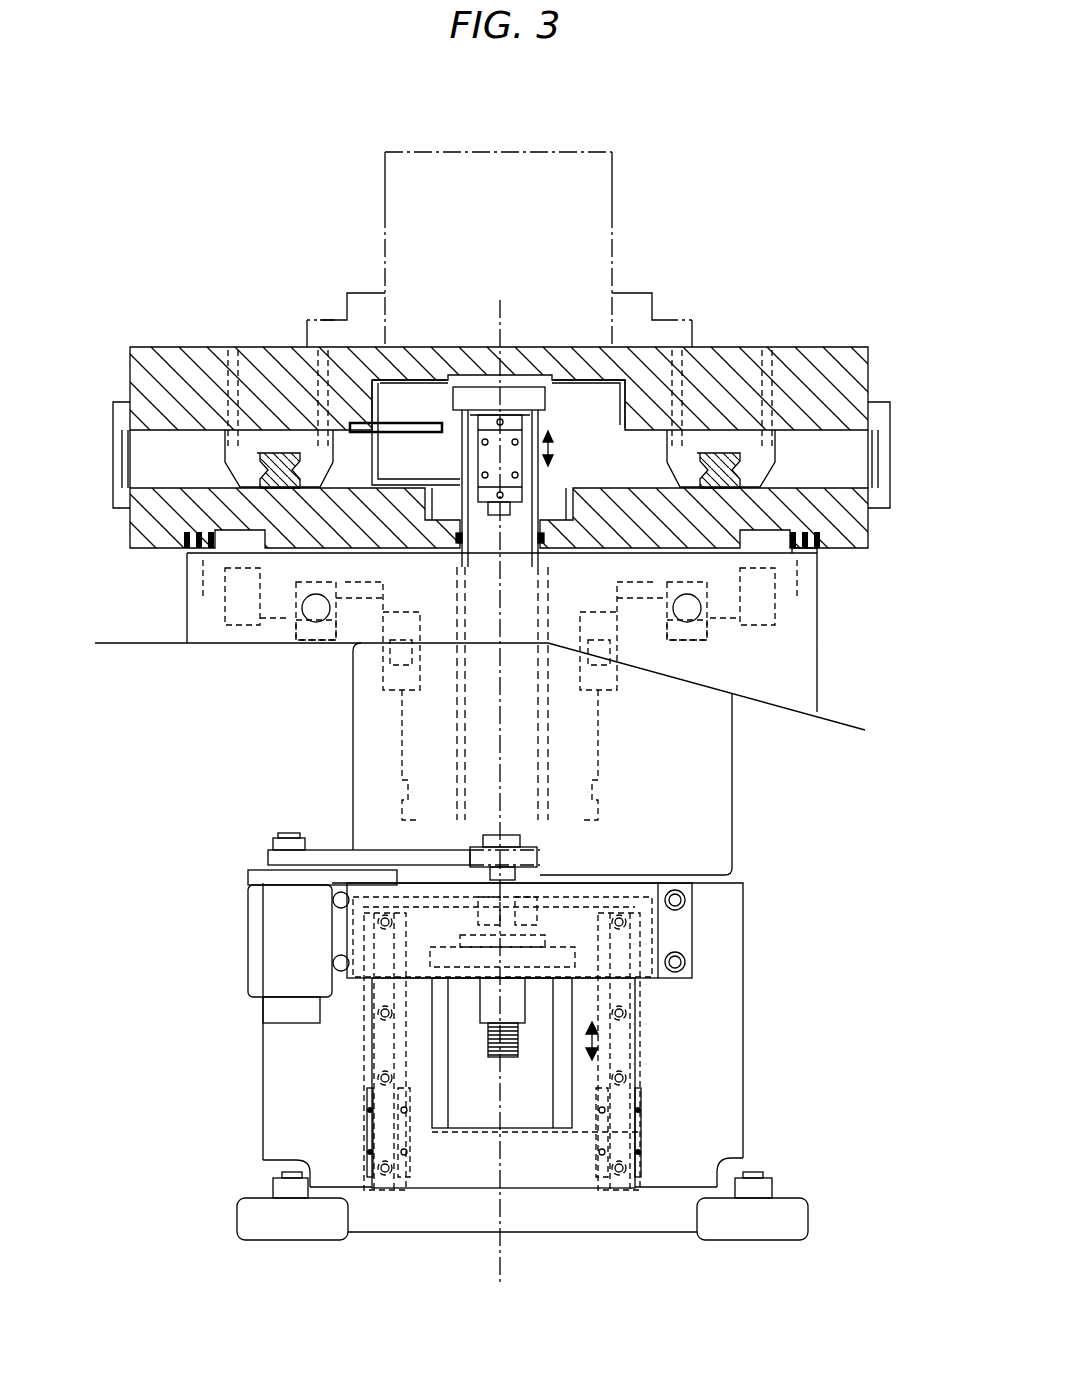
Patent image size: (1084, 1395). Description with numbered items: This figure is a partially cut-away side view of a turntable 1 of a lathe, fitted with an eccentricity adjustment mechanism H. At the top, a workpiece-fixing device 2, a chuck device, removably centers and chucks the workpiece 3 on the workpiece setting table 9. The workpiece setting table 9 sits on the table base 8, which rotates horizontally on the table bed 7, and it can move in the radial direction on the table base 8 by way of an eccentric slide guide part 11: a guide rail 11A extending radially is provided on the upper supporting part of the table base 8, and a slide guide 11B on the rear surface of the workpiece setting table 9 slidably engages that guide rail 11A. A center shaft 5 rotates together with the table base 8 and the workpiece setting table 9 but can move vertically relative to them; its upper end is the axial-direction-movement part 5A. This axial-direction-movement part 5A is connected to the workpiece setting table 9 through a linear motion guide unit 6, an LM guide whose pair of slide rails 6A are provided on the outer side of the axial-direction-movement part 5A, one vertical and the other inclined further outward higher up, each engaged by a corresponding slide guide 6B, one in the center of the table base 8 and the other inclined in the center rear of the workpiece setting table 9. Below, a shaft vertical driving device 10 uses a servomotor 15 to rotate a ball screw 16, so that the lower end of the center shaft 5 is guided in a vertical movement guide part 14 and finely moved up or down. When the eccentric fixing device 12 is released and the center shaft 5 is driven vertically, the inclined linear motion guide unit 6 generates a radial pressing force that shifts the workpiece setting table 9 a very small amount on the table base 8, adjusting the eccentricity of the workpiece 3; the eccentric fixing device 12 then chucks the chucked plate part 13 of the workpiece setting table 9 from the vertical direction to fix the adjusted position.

The turntable 1 is at (786, 230).
The workpiece-fixing device 2 is at (362, 292).
The workpiece 3 is at (416, 150).
The center shaft 5 is at (487, 532).
The axial-direction-movement part 5A is at (554, 386).
The linear motion guide unit 6 is at (509, 436).
The slide rail 6A is at (511, 512).
The slide guide 6B is at (514, 465).
The table bed 7 is at (797, 637).
The table base 8 is at (862, 530).
The workpiece setting table 9 is at (866, 364).
The shaft vertical driving device 10 is at (300, 822).
The eccentric slide guide part 11 is at (287, 438).
The guide rail 11A is at (262, 455).
The slide guide 11B is at (238, 462).
The eccentric fixing device 12 is at (411, 398).
The chucked plate part 13 is at (402, 422).
The vertical movement guide part 14 is at (345, 1107).
The servomotor 15 is at (258, 932).
The ball screw 16 is at (498, 1020).
The eccentricity adjustment mechanism H is at (767, 1037).